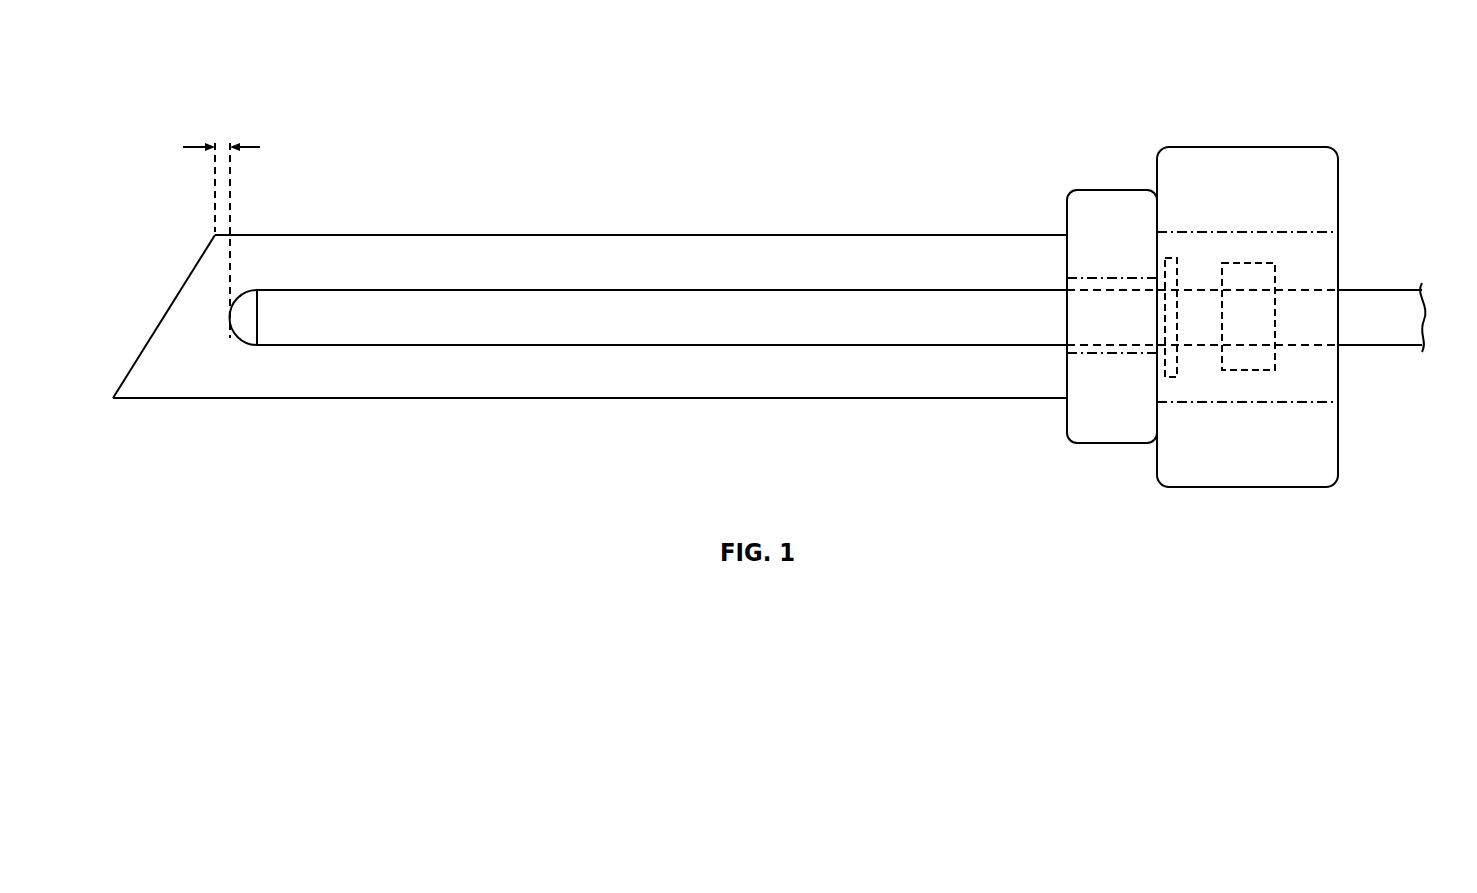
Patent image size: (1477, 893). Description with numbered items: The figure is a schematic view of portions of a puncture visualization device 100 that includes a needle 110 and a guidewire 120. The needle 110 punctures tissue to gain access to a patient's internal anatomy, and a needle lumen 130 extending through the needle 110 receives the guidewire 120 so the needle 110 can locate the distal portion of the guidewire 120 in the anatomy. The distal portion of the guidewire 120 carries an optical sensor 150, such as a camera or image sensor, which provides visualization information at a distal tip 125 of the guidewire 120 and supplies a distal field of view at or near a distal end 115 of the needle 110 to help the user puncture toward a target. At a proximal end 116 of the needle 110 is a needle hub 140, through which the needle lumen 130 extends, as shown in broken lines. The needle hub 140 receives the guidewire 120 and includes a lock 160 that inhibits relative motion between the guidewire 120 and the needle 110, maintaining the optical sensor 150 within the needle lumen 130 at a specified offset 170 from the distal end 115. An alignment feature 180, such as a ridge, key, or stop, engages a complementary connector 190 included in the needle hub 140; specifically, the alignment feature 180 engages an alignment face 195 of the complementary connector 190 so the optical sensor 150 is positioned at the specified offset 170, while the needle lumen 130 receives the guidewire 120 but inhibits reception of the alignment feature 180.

The puncture visualization device 100 is at (288, 60).
The needle 110 is at (561, 233).
The distal end 115 is at (184, 270).
The proximal end 116 is at (1348, 178).
The guidewire 120 is at (709, 315).
The distal tip 125 is at (214, 319).
The needle lumen 130 is at (779, 251).
The needle hub 140 is at (1266, 158).
The optical sensor 150 is at (250, 338).
The lock 160 is at (1258, 362).
The specified offset 170 is at (204, 145).
The alignment feature 180 is at (1175, 368).
The complementary connector 190 is at (1328, 365).
The alignment face 195 is at (1166, 243).